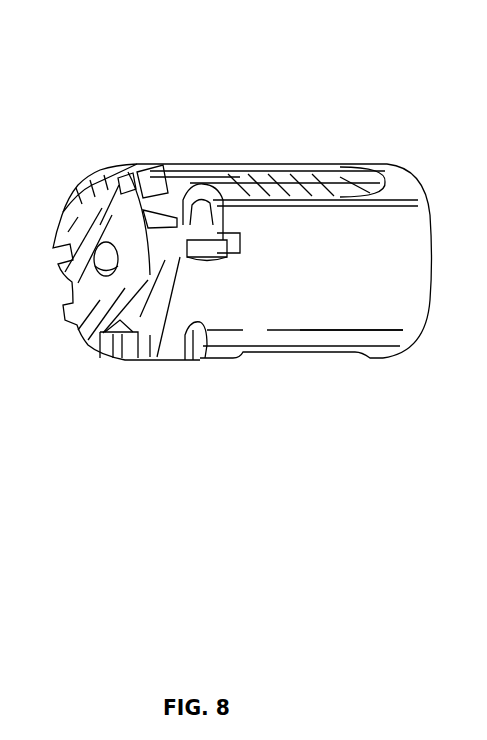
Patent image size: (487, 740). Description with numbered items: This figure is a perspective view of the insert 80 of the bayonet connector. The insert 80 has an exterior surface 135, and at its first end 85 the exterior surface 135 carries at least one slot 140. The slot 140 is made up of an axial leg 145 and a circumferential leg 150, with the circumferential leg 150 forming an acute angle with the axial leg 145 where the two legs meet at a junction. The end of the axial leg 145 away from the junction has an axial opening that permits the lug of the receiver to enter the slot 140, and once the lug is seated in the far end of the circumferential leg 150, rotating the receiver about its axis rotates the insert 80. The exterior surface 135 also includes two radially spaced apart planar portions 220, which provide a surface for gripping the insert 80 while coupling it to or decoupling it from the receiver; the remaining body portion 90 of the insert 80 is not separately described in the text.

The insert 80 is at (217, 382).
The first end 85 is at (137, 162).
The shaft body 90 is at (385, 160).
The exterior surface 135 is at (366, 303).
The slot 140 is at (176, 212).
The axial leg 145 is at (190, 246).
The circumferential leg 150 is at (200, 210).
The planar portions 220 is at (324, 182).